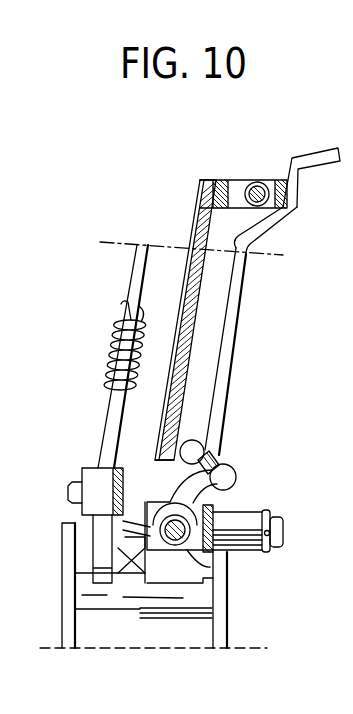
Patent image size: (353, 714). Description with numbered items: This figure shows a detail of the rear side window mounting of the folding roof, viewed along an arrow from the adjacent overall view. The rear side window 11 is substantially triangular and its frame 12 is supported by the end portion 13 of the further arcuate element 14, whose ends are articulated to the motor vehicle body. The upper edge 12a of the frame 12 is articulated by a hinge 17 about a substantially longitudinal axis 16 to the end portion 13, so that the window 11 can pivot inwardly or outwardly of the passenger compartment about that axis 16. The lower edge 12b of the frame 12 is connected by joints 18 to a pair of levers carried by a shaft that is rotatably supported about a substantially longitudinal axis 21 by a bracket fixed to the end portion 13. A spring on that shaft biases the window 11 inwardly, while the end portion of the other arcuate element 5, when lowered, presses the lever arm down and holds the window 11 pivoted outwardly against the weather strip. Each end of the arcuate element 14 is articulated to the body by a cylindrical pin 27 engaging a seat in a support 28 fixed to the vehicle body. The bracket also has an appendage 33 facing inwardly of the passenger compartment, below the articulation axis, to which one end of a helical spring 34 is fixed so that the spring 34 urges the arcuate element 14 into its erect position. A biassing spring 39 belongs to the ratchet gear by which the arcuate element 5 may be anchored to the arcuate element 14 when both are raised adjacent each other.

The arcuate element 5 is at (112, 420).
The rear side window 11 is at (190, 313).
The frame 12 is at (182, 281).
The upper edge 12a is at (212, 180).
The lower edge 12b is at (173, 429).
The end portion 13 is at (270, 222).
The arcuate element 14 is at (308, 153).
The longitudinal axis 16 is at (257, 182).
The hinge 17 is at (233, 181).
The joint 18 is at (216, 460).
The longitudinal axis 21 is at (227, 563).
The cylindrical pin 27 is at (100, 598).
The support 28 is at (62, 572).
The appendage 33 is at (240, 523).
The helical spring 34 is at (272, 538).
The biassing spring 39 is at (120, 345).